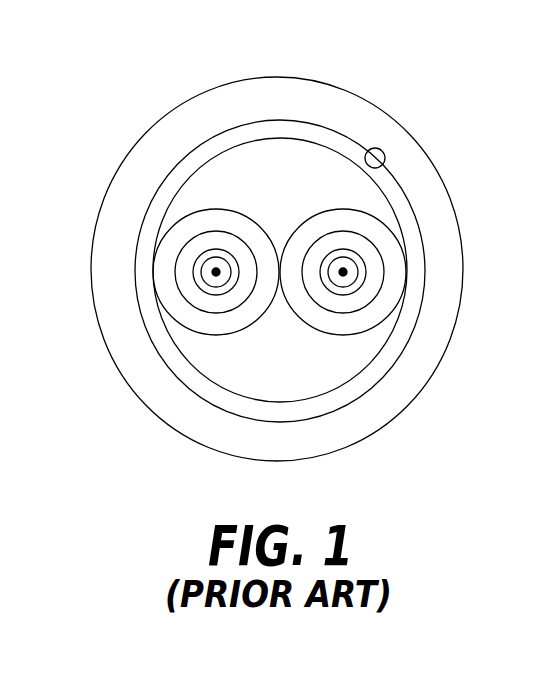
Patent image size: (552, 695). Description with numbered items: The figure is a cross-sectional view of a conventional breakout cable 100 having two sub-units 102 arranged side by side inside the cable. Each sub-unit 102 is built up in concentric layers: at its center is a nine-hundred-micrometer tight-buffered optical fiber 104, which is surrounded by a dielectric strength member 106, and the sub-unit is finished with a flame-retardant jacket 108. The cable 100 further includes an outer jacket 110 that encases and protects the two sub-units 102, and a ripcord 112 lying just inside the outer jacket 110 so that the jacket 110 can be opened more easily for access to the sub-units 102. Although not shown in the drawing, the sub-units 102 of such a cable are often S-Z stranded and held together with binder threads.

The breakout cable 100 is at (162, 74).
The sub-unit 102 is at (340, 337).
The tight-buffered optical fiber 104 is at (211, 272).
The dielectric strength member 106 is at (350, 302).
The flame-retardant jacket 108 is at (393, 287).
The outer jacket 110 is at (342, 112).
The ripcord 112 is at (385, 158).